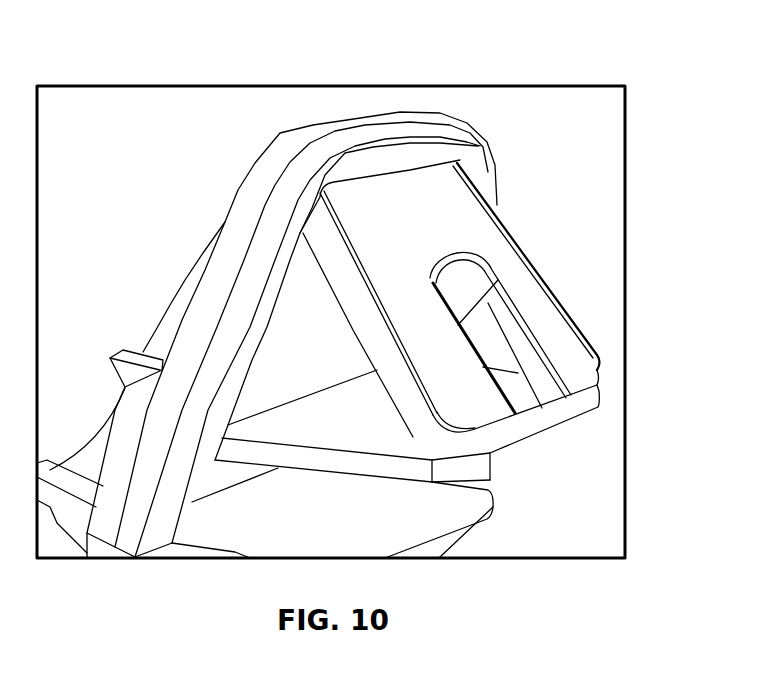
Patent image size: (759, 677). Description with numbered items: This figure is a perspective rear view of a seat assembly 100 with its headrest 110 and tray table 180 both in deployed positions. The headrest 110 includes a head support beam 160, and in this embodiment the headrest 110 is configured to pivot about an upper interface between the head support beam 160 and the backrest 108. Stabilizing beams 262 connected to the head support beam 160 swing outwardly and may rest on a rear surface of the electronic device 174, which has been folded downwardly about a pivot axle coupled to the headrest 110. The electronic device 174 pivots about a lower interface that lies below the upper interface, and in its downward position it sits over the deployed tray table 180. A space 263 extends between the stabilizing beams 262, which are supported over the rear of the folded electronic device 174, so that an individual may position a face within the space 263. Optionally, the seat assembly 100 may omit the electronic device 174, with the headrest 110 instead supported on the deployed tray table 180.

The seat assembly 100 is at (170, 147).
The backrest 108 is at (493, 167).
The headrest 110 is at (480, 223).
The head support beam 160 is at (433, 175).
The electronic device 174 is at (520, 445).
The tray table 180 is at (447, 537).
The stabilizing beams 262 is at (410, 346).
The space 263 is at (480, 326).